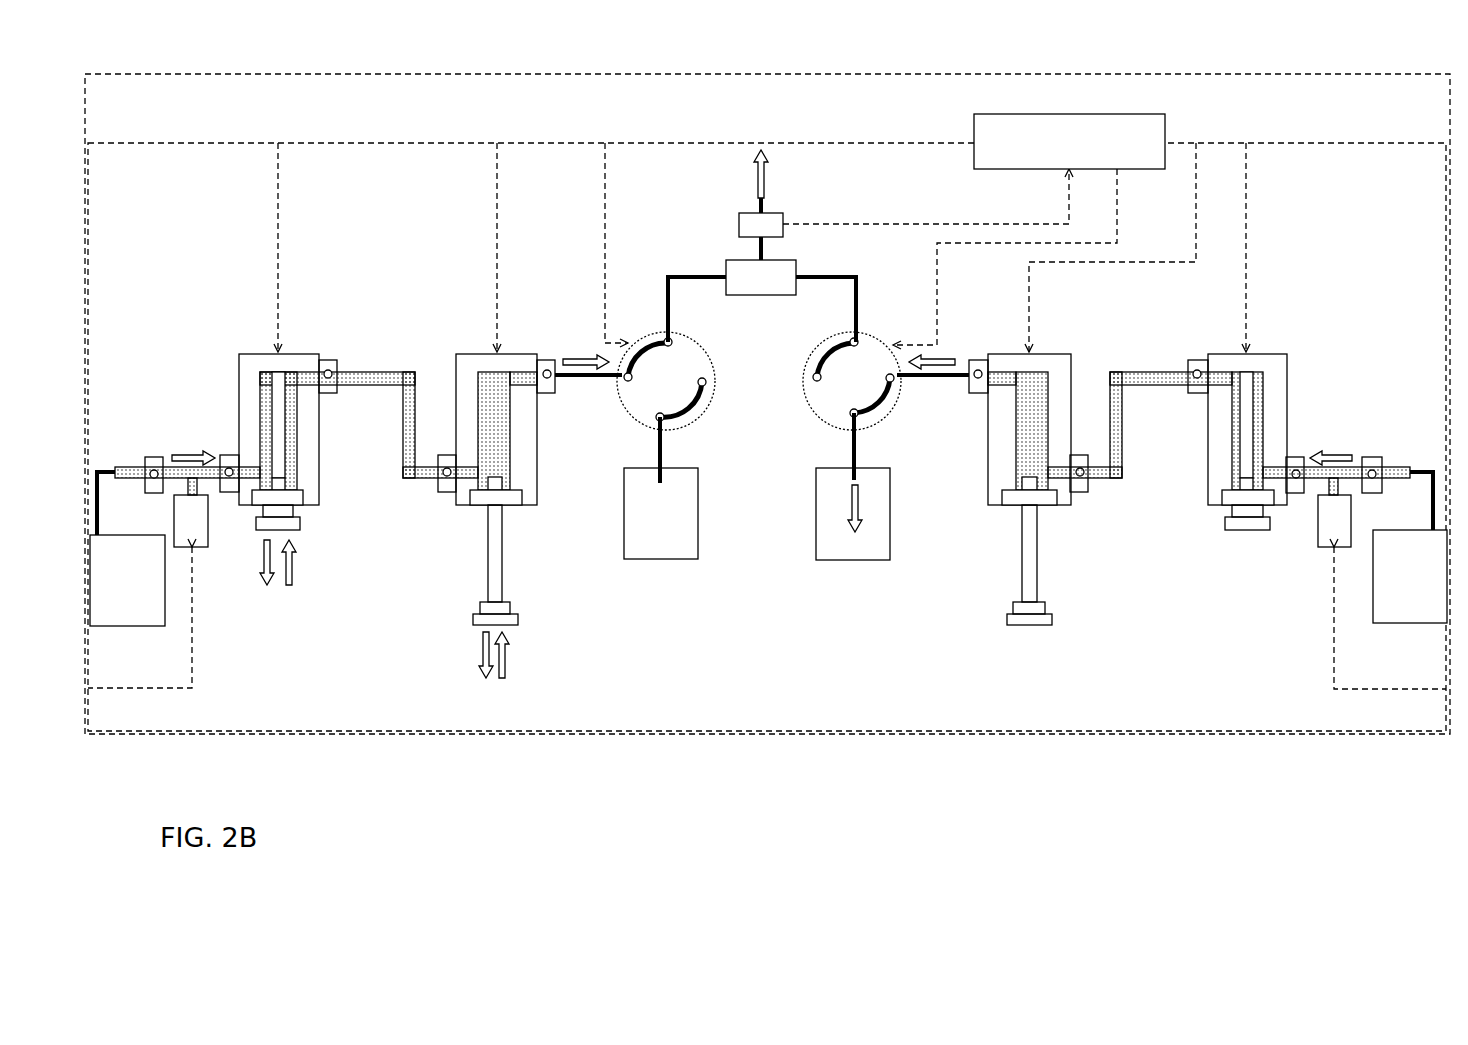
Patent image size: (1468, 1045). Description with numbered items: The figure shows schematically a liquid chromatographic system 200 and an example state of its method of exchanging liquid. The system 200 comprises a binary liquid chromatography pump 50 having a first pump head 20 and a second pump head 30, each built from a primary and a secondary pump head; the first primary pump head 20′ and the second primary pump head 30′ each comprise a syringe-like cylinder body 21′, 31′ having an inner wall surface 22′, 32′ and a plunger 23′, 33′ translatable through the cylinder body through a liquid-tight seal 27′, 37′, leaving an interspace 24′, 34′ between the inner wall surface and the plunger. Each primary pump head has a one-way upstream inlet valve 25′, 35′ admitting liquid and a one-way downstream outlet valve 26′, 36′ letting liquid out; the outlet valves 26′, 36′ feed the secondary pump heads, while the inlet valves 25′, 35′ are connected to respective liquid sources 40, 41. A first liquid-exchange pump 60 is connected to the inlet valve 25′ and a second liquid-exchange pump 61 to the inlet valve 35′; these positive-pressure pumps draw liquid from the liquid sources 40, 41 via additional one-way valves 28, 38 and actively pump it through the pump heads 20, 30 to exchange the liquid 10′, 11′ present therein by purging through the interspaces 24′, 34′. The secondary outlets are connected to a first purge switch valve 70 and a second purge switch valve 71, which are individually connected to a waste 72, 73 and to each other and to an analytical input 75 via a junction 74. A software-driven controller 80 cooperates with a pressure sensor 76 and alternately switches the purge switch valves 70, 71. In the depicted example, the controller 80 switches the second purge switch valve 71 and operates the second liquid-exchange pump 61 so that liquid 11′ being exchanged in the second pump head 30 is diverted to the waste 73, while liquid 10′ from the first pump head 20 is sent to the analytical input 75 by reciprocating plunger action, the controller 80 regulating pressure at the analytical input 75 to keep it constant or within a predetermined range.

The liquid chromatographic system 200 is at (404, 72).
The binary liquid chromatography pump 50 is at (312, 128).
The software-driven controller 80 is at (1069, 141).
The first pump head 20 is at (366, 632).
The second pump head 30 is at (1167, 657).
The first primary pump head 20′ is at (271, 427).
The second primary pump head 30′ is at (1257, 426).
The cylinder body 21′ is at (239, 406).
The inner wall surface 22′ is at (262, 432).
The plunger 23′ is at (285, 432).
The interspace 24′ is at (290, 472).
The one-way upstream inlet valve 25′ is at (232, 494).
The one-way downstream outlet valve 26′ is at (328, 355).
The liquid-tight seal 27′ is at (308, 510).
The additional one-way valve 28 is at (150, 458).
The cylinder body 31′ is at (1287, 404).
The inner wall surface 32′ is at (1235, 445).
The plunger 33′ is at (1258, 440).
The interspace 34′ is at (1232, 484).
The one-way upstream inlet valve 35′ is at (1298, 494).
The one-way downstream outlet valve 36′ is at (1196, 358).
The liquid-tight seal 37′ is at (1225, 510).
The additional one-way valve 38 is at (1373, 457).
The liquid 10′ is at (130, 478).
The liquid 11′ is at (1030, 390).
The liquid source 40 is at (140, 611).
The liquid source 41 is at (1420, 624).
The first liquid-exchange pump 60 is at (200, 548).
The second liquid-exchange pump 61 is at (1336, 548).
The first purge switch valve 70 is at (700, 424).
The second purge switch valve 71 is at (810, 405).
The waste 72 is at (661, 488).
The waste 73 is at (816, 514).
The junction 74 is at (764, 297).
The analytical input 75 is at (768, 198).
The pressure sensor 76 is at (739, 225).